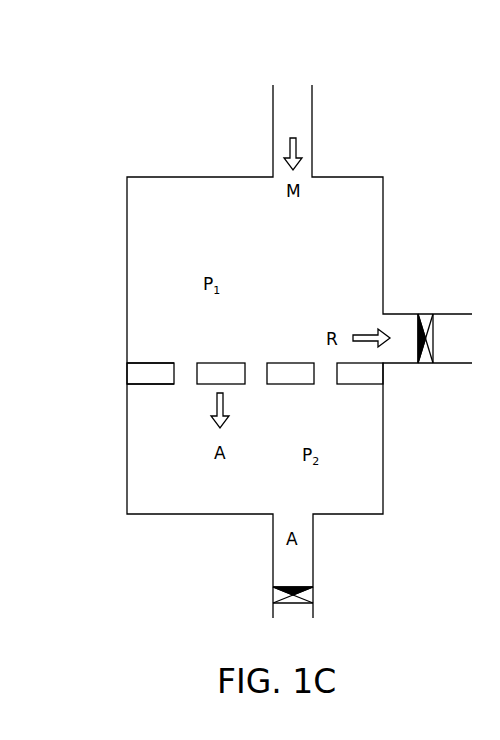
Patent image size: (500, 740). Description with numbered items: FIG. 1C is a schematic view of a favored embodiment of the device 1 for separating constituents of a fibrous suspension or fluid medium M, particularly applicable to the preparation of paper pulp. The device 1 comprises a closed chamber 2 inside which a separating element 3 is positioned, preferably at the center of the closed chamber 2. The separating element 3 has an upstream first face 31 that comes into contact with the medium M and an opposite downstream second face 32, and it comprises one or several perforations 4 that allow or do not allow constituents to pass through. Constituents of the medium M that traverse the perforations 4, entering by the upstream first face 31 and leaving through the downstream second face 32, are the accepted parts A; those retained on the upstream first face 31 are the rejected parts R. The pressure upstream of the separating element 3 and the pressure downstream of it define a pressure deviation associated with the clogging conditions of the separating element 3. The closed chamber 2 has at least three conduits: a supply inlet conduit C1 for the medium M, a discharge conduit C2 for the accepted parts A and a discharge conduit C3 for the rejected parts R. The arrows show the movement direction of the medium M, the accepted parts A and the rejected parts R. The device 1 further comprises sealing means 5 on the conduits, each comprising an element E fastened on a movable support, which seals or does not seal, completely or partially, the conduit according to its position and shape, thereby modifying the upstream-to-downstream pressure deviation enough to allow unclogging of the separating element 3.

The device 1 is at (131, 110).
The closed chamber 2 is at (126, 258).
The separating element 3 is at (126, 373).
The upstream first face 31 is at (148, 362).
The downstream second face 32 is at (150, 386).
The perforations 4 is at (183, 388).
The sealing means 5 is at (427, 366).
The supply inlet conduit C1 is at (314, 120).
The discharge conduit for accepted parts C2 is at (271, 568).
The discharge conduit for rejected parts C3 is at (455, 311).
The element E is at (417, 331).